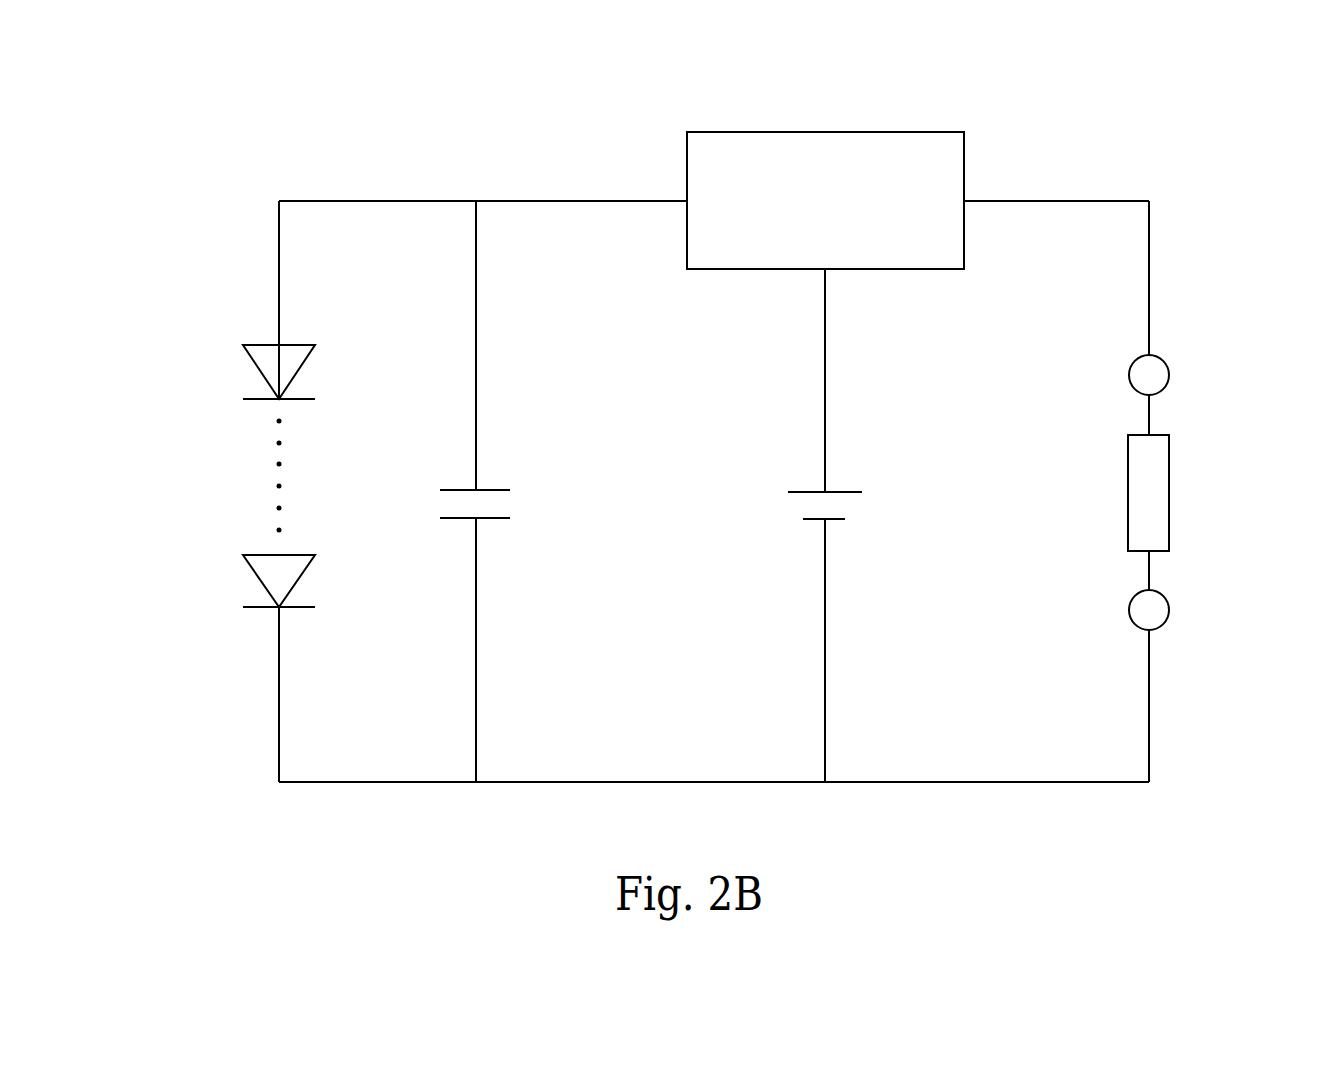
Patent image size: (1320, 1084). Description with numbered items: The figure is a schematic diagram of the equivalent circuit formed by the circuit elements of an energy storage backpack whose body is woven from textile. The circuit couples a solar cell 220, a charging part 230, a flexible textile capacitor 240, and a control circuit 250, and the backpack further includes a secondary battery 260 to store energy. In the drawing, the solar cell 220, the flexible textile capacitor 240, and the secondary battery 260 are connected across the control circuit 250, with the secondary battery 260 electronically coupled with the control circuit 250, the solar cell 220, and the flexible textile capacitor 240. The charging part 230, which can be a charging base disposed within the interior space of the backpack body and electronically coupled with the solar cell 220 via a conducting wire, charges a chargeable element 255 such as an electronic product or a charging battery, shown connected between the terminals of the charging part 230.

The solar cell 220 is at (205, 344).
The charging part 230 is at (1189, 371).
The flexible textile capacitor 240 is at (539, 501).
The control circuit 250 is at (903, 145).
The chargeable element 255 is at (1160, 495).
The secondary battery 260 is at (890, 501).